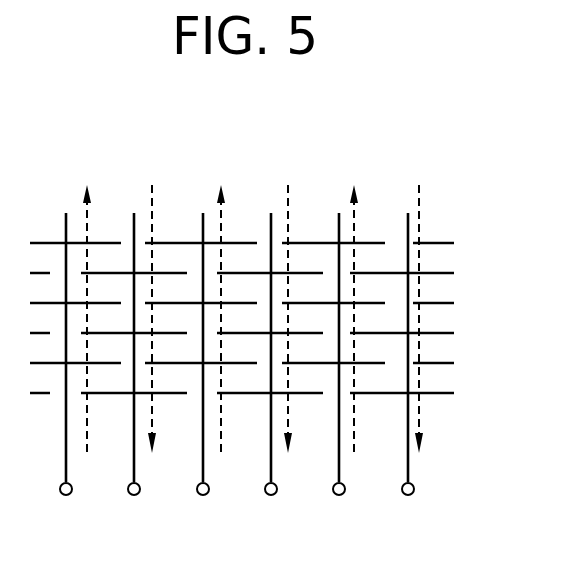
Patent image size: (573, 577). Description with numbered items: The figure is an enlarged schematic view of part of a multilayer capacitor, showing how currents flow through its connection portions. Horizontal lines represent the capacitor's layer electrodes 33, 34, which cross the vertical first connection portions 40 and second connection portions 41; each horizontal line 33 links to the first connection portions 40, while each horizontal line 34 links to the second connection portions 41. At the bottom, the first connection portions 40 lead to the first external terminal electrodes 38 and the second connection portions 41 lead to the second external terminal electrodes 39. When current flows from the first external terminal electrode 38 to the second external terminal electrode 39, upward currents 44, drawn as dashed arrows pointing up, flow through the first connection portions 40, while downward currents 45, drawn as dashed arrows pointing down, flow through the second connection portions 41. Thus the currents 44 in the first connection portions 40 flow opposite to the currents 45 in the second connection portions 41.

The first row electrode lines 33 is at (443, 243).
The second row electrode lines 34 is at (443, 273).
The first external terminal electrode 38 is at (66, 495).
The second external terminal electrode 39 is at (134, 495).
The first connection portion 40 is at (66, 225).
The second connection portion 41 is at (134, 228).
The current 44 is at (83, 212).
The current 45 is at (150, 212).